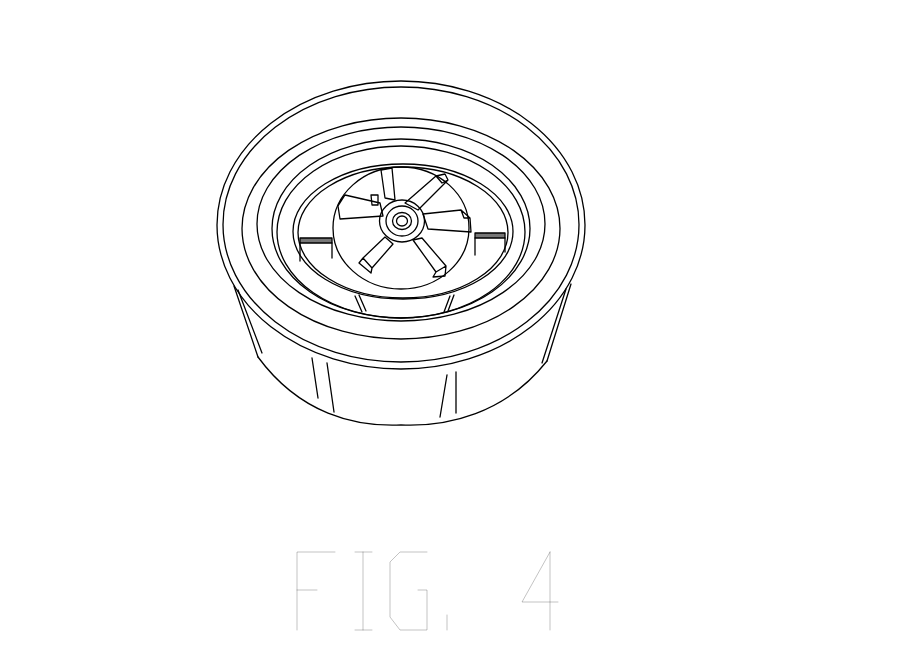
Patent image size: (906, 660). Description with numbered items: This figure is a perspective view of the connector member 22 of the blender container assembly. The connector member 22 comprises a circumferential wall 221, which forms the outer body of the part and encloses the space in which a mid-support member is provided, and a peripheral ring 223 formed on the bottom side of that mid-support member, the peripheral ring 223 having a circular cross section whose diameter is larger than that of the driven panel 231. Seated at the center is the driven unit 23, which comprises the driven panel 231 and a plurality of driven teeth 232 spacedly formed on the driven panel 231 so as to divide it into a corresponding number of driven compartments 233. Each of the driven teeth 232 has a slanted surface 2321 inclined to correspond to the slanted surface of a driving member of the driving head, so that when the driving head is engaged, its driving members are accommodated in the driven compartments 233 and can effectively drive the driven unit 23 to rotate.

The connector member 22 is at (745, 185).
The circumferential wall 221 is at (513, 365).
The peripheral ring 223 is at (327, 308).
The driven unit 23 is at (615, 104).
The driven panel 231 is at (447, 247).
The driven teeth 232 is at (435, 178).
The slanted surface 2321 is at (172, 117).
The driven compartments 233 is at (142, 175).